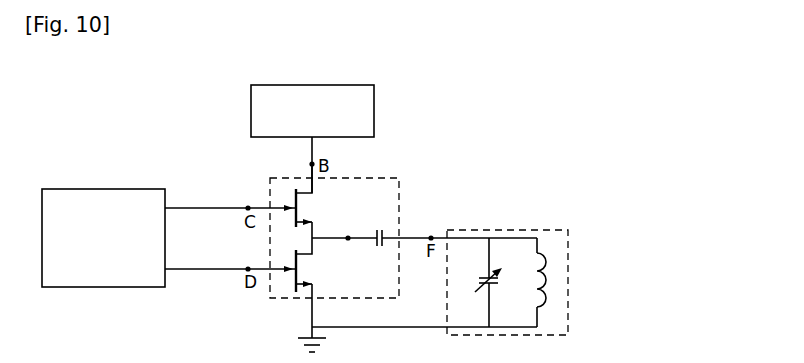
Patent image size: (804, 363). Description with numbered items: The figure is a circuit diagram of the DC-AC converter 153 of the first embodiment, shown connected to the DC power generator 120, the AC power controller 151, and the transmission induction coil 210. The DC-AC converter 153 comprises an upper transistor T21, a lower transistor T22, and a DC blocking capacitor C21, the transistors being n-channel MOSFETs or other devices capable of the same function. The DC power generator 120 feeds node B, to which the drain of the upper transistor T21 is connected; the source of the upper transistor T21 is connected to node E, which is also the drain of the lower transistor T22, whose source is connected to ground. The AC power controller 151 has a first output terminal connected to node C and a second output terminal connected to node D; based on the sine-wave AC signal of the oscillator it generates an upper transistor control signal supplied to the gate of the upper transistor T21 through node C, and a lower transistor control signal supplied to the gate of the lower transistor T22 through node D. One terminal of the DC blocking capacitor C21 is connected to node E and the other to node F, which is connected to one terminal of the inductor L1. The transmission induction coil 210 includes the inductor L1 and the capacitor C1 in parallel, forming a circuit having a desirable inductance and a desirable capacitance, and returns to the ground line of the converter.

The DC power generator 120 is at (312, 84).
The AC power controller 151 is at (105, 287).
The DC-AC converter 153 is at (338, 233).
The transmission induction coil 210 is at (509, 262).
The upper transistor T21 is at (320, 201).
The lower transistor T22 is at (320, 282).
The DC blocking capacitor C21 is at (353, 249).
The capacitor C1 is at (480, 282).
The transmission induction coil (inductor) L1 is at (541, 282).